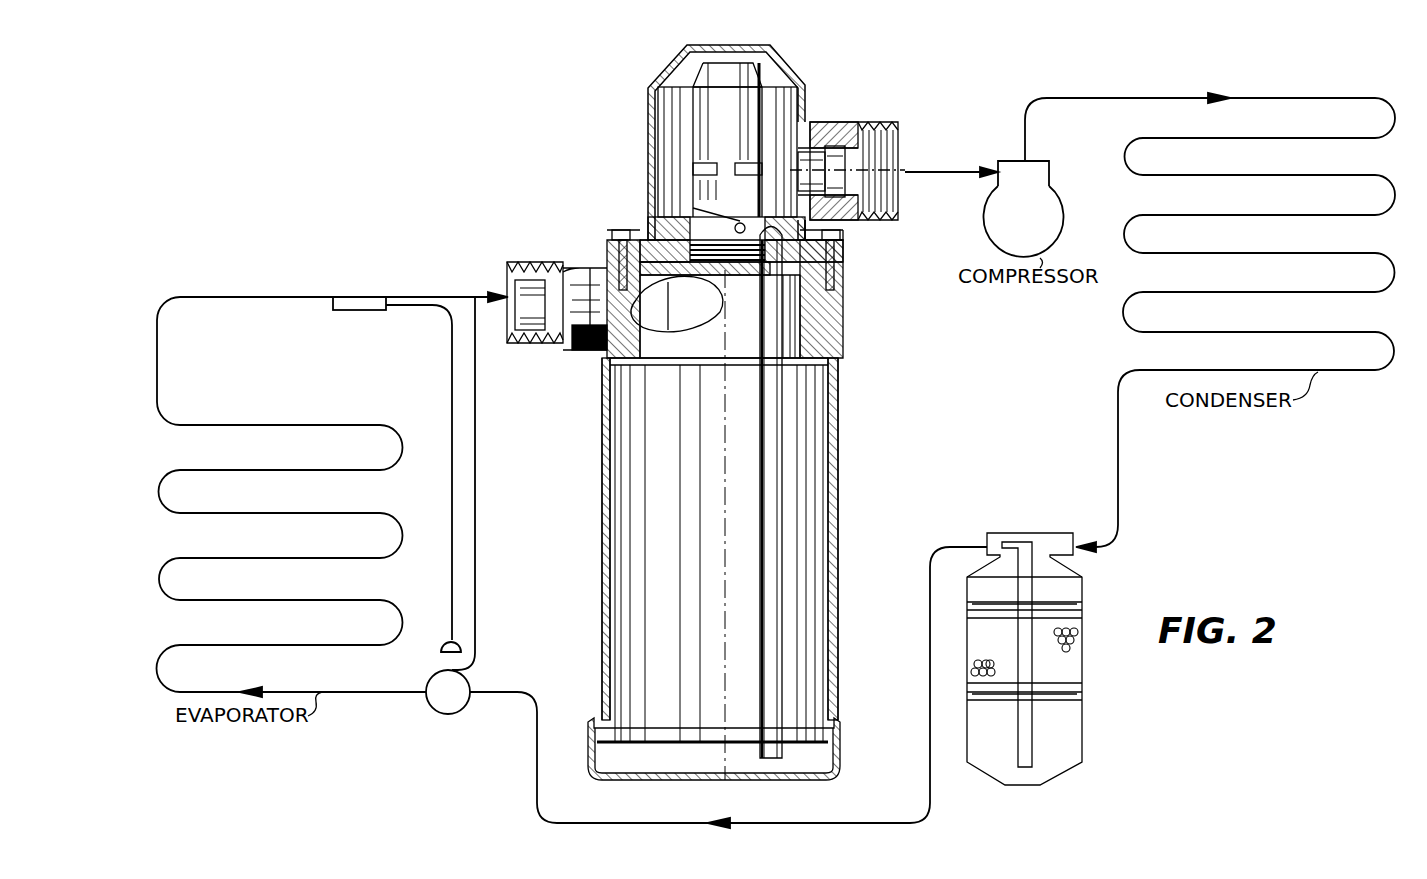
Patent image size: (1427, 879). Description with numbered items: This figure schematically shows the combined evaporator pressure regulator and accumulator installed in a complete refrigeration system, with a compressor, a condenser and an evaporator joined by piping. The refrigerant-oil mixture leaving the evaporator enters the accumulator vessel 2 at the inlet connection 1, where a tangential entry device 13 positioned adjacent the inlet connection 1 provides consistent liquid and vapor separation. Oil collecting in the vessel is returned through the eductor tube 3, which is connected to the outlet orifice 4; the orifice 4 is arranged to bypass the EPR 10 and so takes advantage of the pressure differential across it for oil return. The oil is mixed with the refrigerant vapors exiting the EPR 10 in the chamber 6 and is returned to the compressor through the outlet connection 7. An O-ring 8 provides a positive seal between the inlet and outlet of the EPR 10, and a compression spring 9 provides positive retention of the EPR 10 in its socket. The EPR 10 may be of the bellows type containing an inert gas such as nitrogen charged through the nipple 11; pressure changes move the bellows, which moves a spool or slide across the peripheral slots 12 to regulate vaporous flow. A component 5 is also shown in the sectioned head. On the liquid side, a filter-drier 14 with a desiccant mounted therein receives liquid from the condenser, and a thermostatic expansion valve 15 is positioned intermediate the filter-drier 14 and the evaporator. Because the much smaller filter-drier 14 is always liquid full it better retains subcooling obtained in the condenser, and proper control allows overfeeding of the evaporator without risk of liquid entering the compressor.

The inlet connection 1 is at (517, 264).
The accumulator vessel 2 is at (603, 448).
The eductor tube 3 is at (762, 560).
The outlet orifice 4 is at (812, 228).
The flange bolt 5 is at (836, 268).
The chamber 6 is at (668, 62).
The outlet connection 7 is at (860, 122).
The O-ring 8 is at (652, 198).
The compression spring 9 is at (655, 220).
The EPR 10 is at (698, 110).
The nipple 11 is at (740, 223).
The peripheral slots 12 is at (693, 170).
The tangential entry device 13 is at (692, 326).
The filter-drier 14 is at (1084, 726).
The thermostatic expansion valve 15 is at (442, 713).